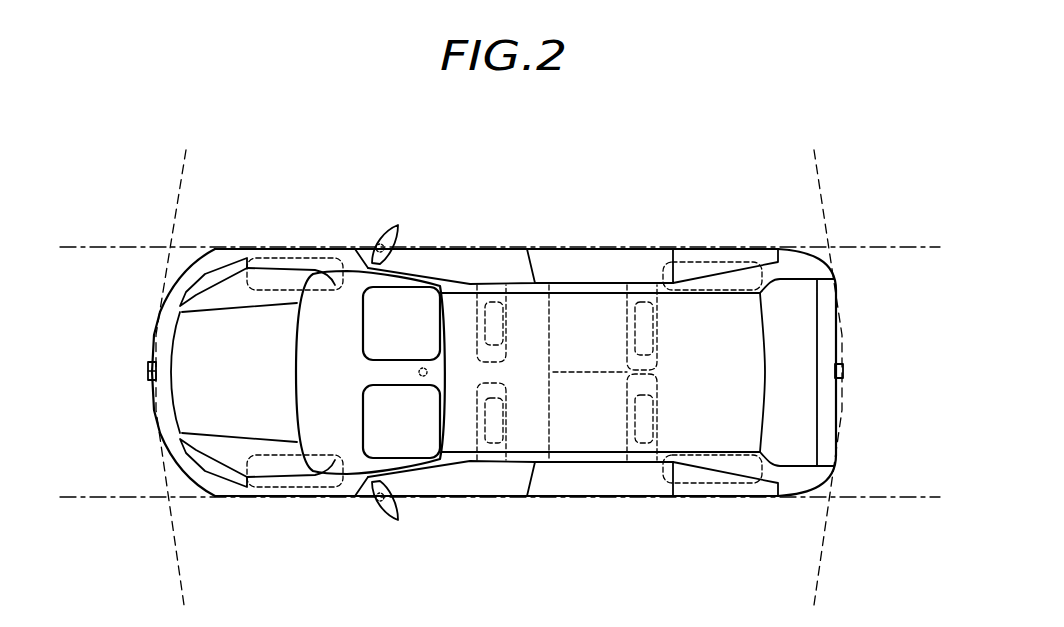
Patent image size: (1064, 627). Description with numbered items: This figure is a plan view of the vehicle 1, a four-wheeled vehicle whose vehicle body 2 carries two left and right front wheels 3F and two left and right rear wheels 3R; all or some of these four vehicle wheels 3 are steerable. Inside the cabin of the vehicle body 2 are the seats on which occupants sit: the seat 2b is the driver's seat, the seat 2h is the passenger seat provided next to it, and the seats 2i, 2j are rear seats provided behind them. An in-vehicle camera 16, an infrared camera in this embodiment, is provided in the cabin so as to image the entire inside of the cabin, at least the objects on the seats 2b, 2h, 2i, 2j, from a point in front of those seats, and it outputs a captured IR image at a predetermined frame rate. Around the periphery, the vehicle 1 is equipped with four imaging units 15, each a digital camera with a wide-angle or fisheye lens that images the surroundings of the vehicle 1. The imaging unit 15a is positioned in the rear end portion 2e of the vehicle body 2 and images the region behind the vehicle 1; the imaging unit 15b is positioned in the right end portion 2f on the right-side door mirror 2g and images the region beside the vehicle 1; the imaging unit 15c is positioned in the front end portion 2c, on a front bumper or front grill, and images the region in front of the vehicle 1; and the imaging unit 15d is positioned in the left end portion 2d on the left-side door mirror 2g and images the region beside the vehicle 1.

The vehicle 1 is at (614, 172).
The vehicle body 2 is at (783, 247).
The seat 2b is at (463, 283).
The front end portion 2c is at (150, 391).
The left end portion 2d is at (602, 497).
The rear end portion 2e is at (844, 394).
The right end portion 2f is at (613, 248).
The door mirror 2g is at (400, 226).
The seat 2h is at (463, 462).
The seat 2i is at (577, 283).
The seat 2j is at (577, 462).
The vehicle wheel 3 is at (504, 373).
The front wheel 3F is at (295, 258).
The rear wheel 3R is at (706, 250).
The imaging unit 15 is at (510, 388).
The imaging unit 15a is at (844, 371).
The imaging unit 15b is at (380, 244).
The imaging unit 15c is at (148, 369).
The imaging unit 15d is at (378, 501).
The in-vehicle camera 16 is at (418, 372).